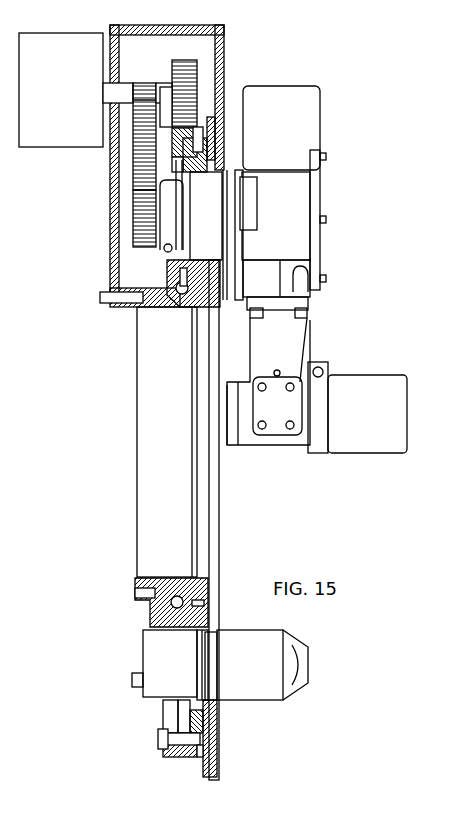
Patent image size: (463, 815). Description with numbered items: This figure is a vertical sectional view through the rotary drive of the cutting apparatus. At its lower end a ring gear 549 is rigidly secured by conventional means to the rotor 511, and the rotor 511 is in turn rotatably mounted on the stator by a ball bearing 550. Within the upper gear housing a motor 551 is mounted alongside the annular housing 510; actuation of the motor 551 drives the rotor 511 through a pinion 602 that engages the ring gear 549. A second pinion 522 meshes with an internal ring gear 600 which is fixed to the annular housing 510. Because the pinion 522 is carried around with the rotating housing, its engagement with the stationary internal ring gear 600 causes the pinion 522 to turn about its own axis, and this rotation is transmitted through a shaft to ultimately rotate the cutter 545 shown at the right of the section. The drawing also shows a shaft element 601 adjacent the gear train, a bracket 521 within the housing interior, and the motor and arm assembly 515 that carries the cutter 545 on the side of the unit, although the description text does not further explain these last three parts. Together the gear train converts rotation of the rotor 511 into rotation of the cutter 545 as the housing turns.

The annular housing 510 is at (113, 253).
The rotor 511 is at (162, 618).
The motor arm assembly 515 is at (290, 350).
The bracket 521 is at (165, 247).
The pinion 522 is at (138, 225).
The cutter 545 is at (373, 388).
The ring gear 549 is at (162, 757).
The ball bearing 550 is at (162, 602).
The motor 551 is at (69, 43).
The internal ring gear 600 is at (148, 125).
The shaft 601 is at (128, 94).
The pinion 602 is at (201, 80).